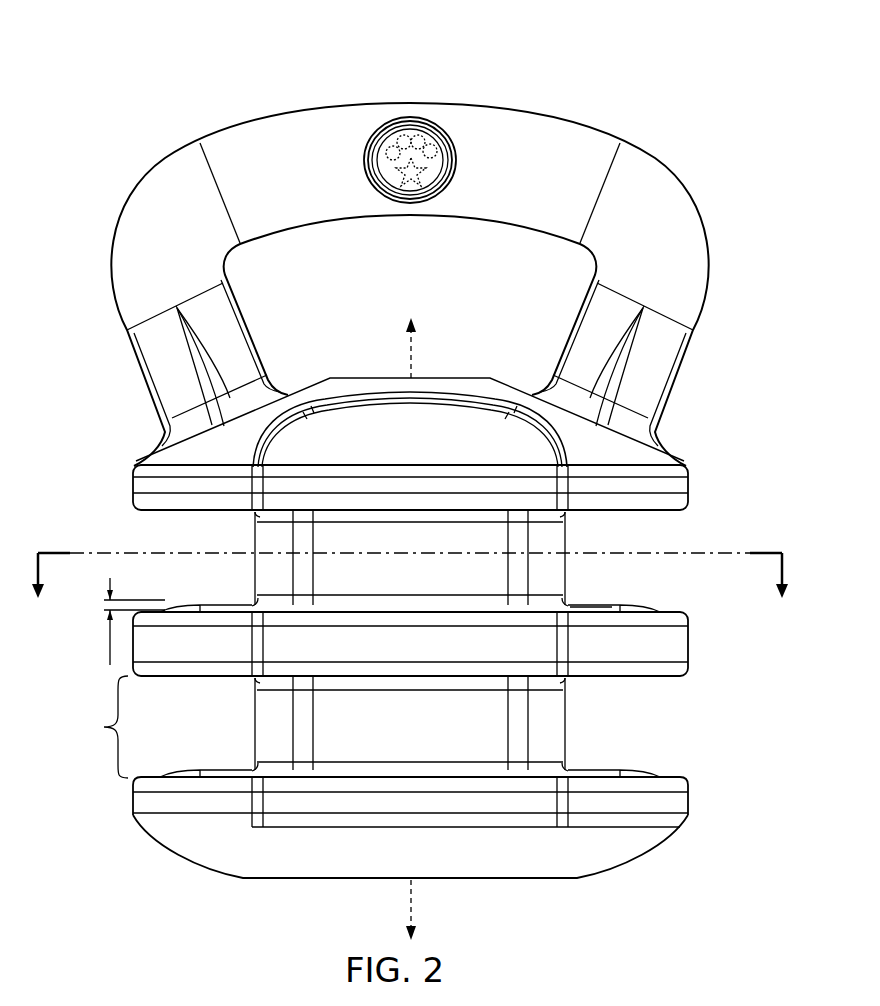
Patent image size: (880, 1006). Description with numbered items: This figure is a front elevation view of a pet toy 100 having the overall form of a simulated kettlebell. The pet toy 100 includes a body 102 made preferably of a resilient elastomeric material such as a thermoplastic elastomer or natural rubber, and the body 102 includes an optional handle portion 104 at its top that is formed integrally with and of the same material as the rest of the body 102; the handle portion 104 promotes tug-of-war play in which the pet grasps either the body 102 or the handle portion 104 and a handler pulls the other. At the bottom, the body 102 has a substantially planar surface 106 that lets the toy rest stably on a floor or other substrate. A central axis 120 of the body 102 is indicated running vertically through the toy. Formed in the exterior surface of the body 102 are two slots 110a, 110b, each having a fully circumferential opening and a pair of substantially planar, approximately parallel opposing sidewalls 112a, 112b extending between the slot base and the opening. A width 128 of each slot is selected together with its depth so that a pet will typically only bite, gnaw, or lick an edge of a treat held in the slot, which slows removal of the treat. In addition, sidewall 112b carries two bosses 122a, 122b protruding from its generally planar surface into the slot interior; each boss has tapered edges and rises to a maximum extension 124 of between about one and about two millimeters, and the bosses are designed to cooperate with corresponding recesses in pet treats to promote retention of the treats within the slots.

The pet toy 100 is at (712, 106).
The body 102 is at (369, 413).
The handle portion 104 is at (231, 148).
The substantially planar surface 106 is at (547, 880).
The slot 110a is at (684, 532).
The slot 110b is at (682, 731).
The sidewall 112a is at (162, 512).
The sidewall 112b is at (594, 606).
The central axis 120 is at (413, 343).
The boss 122a is at (208, 601).
The boss 122b is at (628, 601).
The maximum extension 124 is at (110, 665).
The width 128 is at (92, 727).